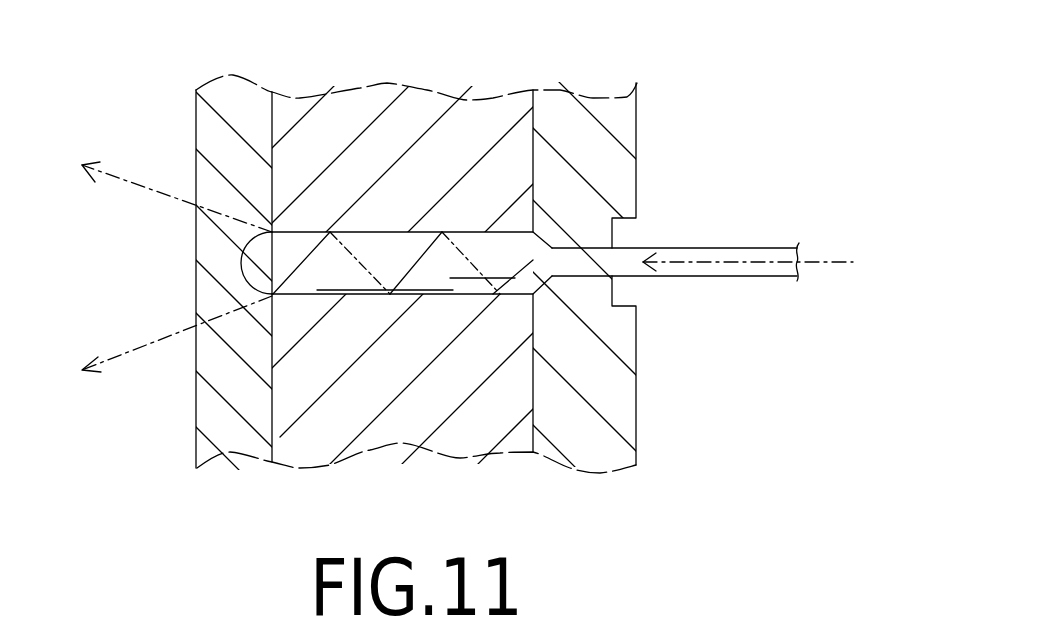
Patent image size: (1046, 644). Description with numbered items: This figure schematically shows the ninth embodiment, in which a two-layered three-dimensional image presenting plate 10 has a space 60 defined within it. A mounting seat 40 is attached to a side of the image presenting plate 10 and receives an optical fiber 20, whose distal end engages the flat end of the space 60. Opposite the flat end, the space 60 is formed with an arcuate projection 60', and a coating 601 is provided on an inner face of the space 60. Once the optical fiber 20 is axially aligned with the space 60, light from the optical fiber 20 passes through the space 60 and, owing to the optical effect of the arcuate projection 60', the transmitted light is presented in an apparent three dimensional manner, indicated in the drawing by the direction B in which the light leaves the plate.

The 3D image presenting plate 10 is at (281, 75).
The optical fiber 20 is at (687, 270).
The mounting seat 40 is at (613, 168).
The space 60 is at (412, 166).
The arcuate projection 60' is at (199, 273).
The coating 601 is at (460, 293).
The direction B is at (157, 193).